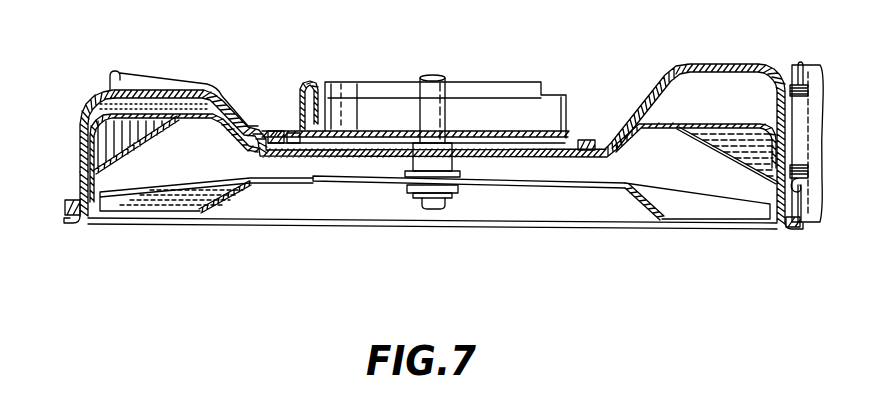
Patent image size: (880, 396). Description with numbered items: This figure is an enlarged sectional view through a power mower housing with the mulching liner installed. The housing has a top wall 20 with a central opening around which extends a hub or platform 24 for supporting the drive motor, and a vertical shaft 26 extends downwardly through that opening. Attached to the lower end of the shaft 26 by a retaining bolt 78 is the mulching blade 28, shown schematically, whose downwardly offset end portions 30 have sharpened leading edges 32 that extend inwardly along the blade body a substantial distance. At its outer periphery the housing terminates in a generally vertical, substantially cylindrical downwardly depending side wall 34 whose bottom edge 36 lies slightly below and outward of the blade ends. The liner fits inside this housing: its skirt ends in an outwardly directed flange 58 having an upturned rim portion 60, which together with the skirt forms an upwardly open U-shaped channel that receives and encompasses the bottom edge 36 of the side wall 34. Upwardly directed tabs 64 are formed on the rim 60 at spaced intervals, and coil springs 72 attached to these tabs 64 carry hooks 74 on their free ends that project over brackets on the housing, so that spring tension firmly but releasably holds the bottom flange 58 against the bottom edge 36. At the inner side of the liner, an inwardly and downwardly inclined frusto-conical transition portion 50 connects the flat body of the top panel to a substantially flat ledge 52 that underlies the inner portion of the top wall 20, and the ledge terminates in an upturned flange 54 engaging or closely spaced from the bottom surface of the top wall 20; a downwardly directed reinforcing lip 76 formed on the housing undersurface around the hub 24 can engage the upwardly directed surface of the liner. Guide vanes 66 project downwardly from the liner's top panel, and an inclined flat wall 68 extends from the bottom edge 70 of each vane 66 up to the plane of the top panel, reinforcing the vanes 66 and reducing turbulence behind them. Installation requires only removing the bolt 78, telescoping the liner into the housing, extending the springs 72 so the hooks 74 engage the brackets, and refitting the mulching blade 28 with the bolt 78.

The top wall 20 is at (177, 88).
The hub or platform 24 is at (545, 83).
The vertical shaft 26 is at (437, 77).
The mulching blade 28 is at (330, 186).
The downwardly offset end portions 30 is at (195, 198).
The leading edges 32 is at (155, 214).
The side wall 34 is at (80, 125).
The bottom edge 36 is at (81, 196).
The transition portion 50 is at (621, 141).
The ledge 52 is at (590, 151).
The upturned flange 54 is at (303, 82).
The outwardly directed flange 58 is at (81, 225).
The upturned rim portion 60 is at (65, 207).
The tabs 64 is at (806, 197).
The guide vanes 66 is at (110, 143).
The inclined wall 68 is at (757, 152).
The bottom edge 70 is at (160, 135).
The coil springs 72 is at (806, 172).
The hooks 74 is at (806, 75).
The reinforcing lip 76 is at (278, 130).
The retaining bolt 78 is at (436, 209).